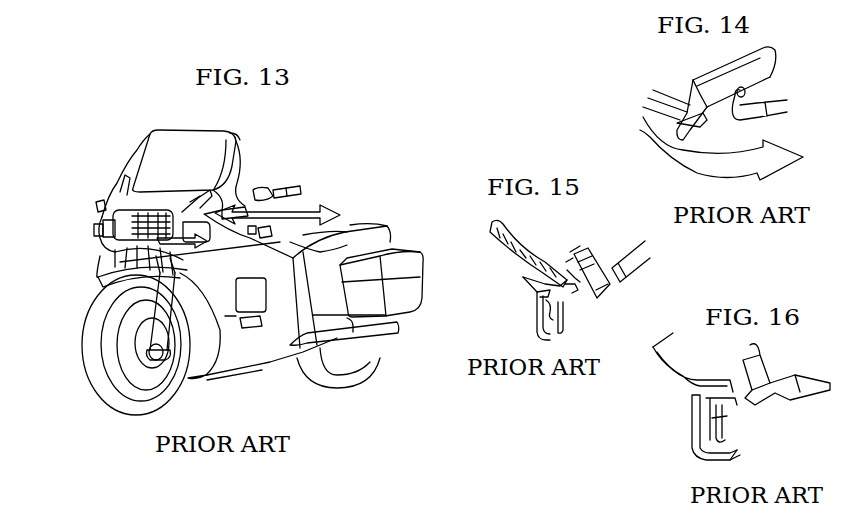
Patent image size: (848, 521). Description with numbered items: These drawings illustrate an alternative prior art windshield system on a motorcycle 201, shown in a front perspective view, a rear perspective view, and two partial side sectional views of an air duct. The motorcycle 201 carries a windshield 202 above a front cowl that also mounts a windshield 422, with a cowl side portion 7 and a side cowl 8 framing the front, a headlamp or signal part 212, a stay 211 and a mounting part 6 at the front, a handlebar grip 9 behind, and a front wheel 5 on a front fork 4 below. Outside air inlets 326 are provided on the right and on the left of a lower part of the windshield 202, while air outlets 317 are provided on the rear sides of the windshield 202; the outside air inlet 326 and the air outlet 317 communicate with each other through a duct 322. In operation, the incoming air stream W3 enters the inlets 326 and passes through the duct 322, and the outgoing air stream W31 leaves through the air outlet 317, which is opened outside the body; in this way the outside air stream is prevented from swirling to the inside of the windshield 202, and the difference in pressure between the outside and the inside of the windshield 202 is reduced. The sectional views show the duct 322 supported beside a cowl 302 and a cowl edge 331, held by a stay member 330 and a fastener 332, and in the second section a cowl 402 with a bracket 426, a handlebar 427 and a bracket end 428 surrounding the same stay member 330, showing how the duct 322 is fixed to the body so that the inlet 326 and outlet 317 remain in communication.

In FIG. 13, the motorcycle 201 is at (72, 167).
In FIG. 13, the windshield 422 is at (177, 140).
In FIG. 13, the windshield 202 is at (143, 145).
In FIG. 13, the cowl side portion 7 is at (127, 217).
In FIG. 13, the outside air inlet 326 is at (187, 187).
In FIG. 15, the outside air inlet 326 is at (523, 277).
In FIG. 13, the wind flow W3 is at (164, 201).
In FIG. 13, the turn signal / mirror 212 is at (102, 203).
In FIG. 13, the stay 211 is at (93, 215).
In FIG. 15, the stay 211 is at (537, 318).
In FIG. 13, the mounting part 6 is at (93, 232).
In FIG. 13, the side cowl 8 is at (240, 203).
In FIG. 13, the handlebar grip 9 is at (288, 193).
In FIG. 15, the handlebar grip 9 is at (610, 293).
In FIG. 13, the front wheel 5 is at (80, 347).
In FIG. 13, the front fork 4 is at (183, 330).
In FIG. 14, the air outlet 317 is at (693, 82).
In FIG. 14, the wind flow direction W31 is at (727, 183).
In FIG. 15, the cowl 302 is at (490, 238).
In FIG. 15, the cowl edge 331 is at (567, 270).
In FIG. 15, the duct 322 is at (537, 292).
In FIG. 15, the stay member 330 is at (563, 323).
In FIG. 16, the stay member 330 is at (727, 435).
In FIG. 15, the fastener 332 is at (580, 290).
In FIG. 16, the cowl 402 is at (655, 357).
In FIG. 16, the bracket 426 is at (690, 395).
In FIG. 16, the handlebar 427 is at (784, 383).
In FIG. 16, the bracket end 428 is at (737, 450).